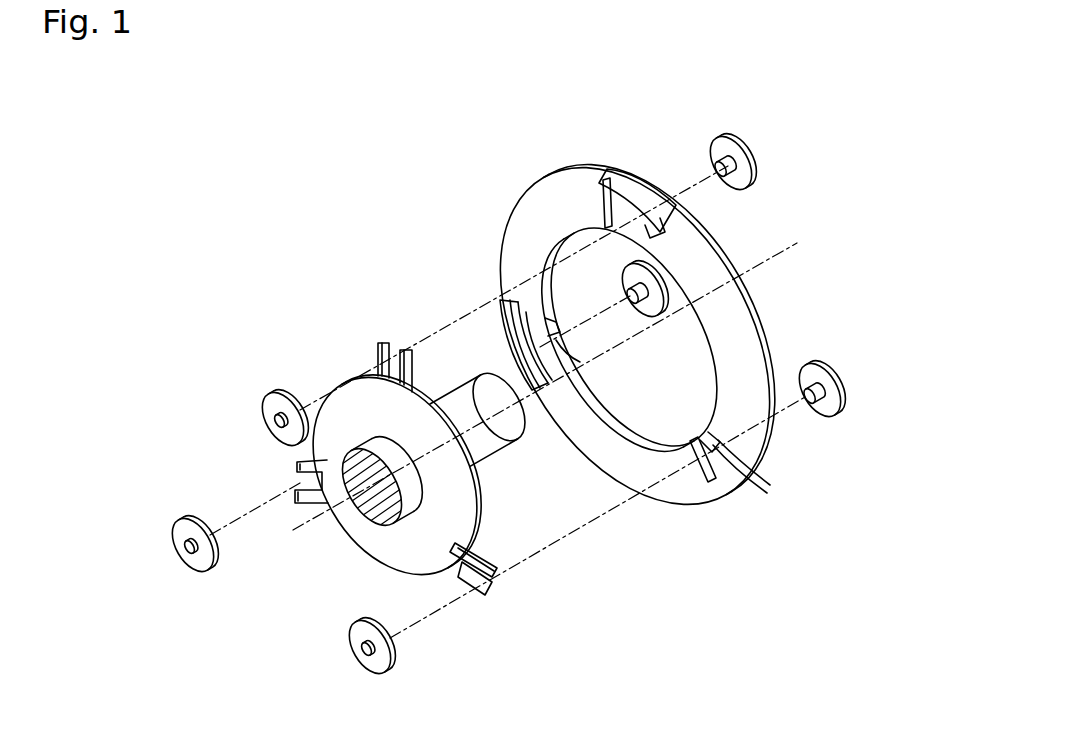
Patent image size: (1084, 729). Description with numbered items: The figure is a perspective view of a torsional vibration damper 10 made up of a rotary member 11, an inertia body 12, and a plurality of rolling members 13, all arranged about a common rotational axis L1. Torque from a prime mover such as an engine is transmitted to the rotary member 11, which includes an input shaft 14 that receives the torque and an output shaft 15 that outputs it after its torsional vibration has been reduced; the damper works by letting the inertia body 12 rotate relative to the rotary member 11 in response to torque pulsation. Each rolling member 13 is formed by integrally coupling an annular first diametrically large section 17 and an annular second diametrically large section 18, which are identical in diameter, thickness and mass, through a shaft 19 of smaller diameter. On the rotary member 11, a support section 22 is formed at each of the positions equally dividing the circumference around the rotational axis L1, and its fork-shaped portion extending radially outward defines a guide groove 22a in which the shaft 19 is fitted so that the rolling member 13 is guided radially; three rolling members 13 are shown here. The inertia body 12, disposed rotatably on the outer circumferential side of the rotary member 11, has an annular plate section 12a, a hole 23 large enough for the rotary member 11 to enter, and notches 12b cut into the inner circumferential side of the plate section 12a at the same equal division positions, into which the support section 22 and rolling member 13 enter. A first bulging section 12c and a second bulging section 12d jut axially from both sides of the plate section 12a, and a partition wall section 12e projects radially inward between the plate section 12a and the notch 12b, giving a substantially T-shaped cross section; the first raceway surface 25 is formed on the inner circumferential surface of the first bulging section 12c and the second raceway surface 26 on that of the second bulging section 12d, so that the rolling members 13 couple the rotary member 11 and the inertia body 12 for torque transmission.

The torsional vibration damper 10 is at (346, 221).
The rotary member 11 is at (483, 506).
The inertia body 12 is at (506, 208).
The plate section 12a is at (561, 185).
The notch 12b is at (652, 228).
The first bulging section 12c is at (628, 175).
The second bulging section 12d is at (642, 180).
The partition wall section 12e is at (512, 335).
The rolling member 13 is at (733, 132).
The input shaft 14 is at (368, 518).
The output shaft 15 is at (497, 438).
The first diametrically large section 17 is at (294, 398).
The second diametrically large section 18 is at (745, 150).
The shaft 19 is at (722, 178).
The support section 22 is at (399, 336).
The guide groove 22a is at (380, 356).
The hole 23 is at (612, 415).
The first raceway surface 25 is at (605, 205).
The second raceway surface 26 is at (570, 352).
The rotational axis L1 is at (740, 280).